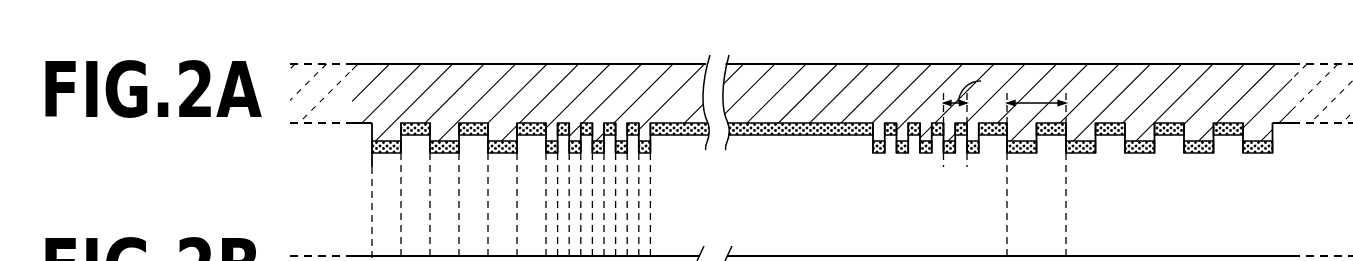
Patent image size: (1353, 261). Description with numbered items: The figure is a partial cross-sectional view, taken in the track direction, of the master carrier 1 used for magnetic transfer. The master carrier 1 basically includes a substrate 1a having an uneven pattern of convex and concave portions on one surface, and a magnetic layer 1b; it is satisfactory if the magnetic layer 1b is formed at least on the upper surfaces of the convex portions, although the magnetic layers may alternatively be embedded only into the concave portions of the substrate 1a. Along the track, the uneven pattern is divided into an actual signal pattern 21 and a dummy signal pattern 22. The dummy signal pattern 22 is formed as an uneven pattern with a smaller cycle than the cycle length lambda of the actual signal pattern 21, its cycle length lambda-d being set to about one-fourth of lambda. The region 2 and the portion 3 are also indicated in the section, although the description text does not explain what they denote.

The master carrier 1 is at (397, 60).
The substrate 1a is at (481, 132).
The magnetic layer 1b is at (504, 141).
The recording region 2 is at (822, 167).
The actual signal pattern 21 is at (1272, 161).
The dummy signal pattern 22 is at (979, 161).
The mirror (flat) portion 3 is at (873, 160).